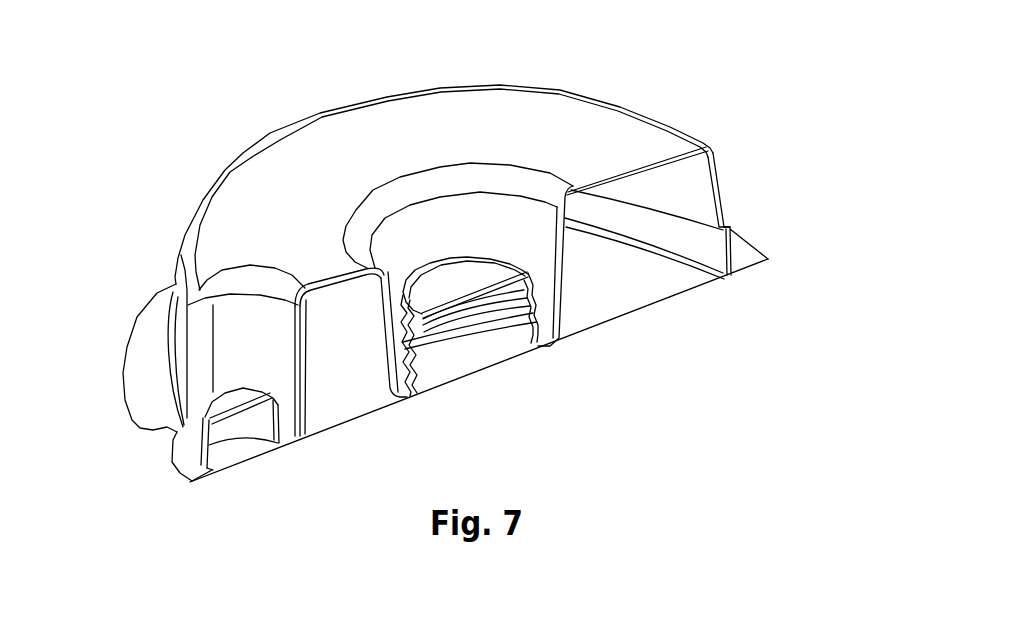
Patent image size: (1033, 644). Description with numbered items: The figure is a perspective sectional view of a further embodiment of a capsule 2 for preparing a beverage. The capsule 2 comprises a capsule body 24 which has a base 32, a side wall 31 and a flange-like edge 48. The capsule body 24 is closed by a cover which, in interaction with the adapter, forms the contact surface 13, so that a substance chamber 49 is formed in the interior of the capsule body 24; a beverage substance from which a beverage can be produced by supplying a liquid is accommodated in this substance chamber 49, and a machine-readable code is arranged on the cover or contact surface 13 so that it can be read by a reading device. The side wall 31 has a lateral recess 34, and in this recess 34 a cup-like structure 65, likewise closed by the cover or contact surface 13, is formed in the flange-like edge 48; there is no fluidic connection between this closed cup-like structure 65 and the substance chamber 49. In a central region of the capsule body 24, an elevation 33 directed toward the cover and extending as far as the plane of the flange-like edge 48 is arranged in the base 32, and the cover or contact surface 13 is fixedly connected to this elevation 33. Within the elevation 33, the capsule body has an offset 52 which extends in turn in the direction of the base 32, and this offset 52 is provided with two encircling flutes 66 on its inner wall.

The capsule 2 is at (782, 98).
The contact surface 13 is at (670, 299).
The capsule body 24 is at (613, 104).
The side wall 31 is at (723, 193).
The base 32 is at (402, 140).
The elevation 33 is at (407, 398).
The lateral recess 34 is at (238, 347).
The flange-like edge 48 is at (752, 259).
The substance chamber 49 is at (599, 278).
The offset 52 is at (430, 282).
The cup-like structure 65 is at (220, 407).
The encircling flutes 66 is at (528, 278).